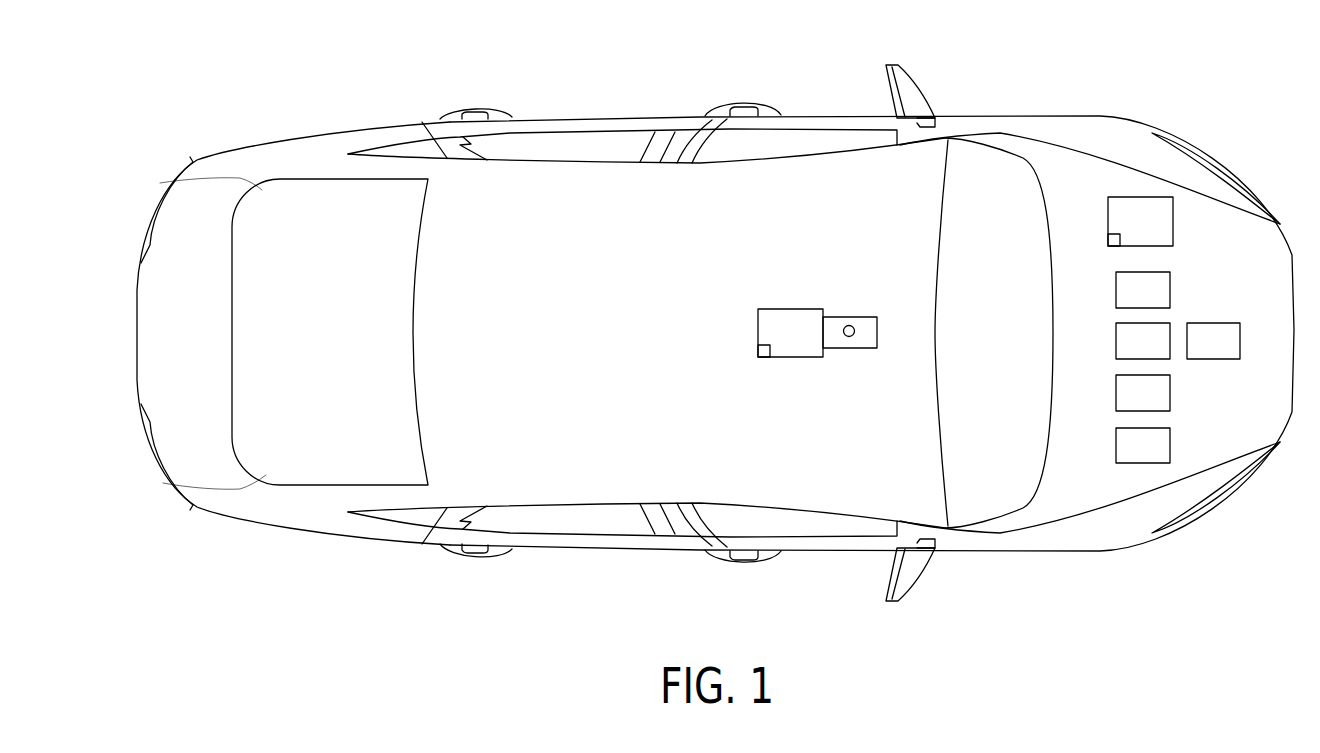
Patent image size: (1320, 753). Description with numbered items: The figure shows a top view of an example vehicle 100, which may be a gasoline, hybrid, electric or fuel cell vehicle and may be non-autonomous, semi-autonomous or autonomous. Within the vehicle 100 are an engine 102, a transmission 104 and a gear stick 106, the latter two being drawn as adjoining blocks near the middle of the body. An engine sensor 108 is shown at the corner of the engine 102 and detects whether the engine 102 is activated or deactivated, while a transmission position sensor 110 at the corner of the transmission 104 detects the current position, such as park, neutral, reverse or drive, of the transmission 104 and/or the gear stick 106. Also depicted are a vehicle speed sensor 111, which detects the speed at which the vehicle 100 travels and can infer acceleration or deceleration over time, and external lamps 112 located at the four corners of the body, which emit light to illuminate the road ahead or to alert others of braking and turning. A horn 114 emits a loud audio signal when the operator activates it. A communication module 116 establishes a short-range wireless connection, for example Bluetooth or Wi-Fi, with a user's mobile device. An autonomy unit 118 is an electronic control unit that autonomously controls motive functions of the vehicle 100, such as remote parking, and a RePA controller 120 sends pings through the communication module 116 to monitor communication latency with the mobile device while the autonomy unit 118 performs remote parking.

The vehicle 100 is at (1224, 66).
The engine 102 is at (1158, 233).
The transmission 104 is at (809, 344).
The gear stick 106 is at (850, 325).
The engine sensor 108 is at (1114, 243).
The transmission position sensor 110 is at (767, 357).
The vehicle speed sensor 111 is at (1231, 353).
The external lamps 112 is at (160, 199).
The horn 114 is at (1161, 302).
The communication module 116 is at (1161, 353).
The autonomy unit 118 is at (1161, 405).
The RePA controller 120 is at (1161, 457).